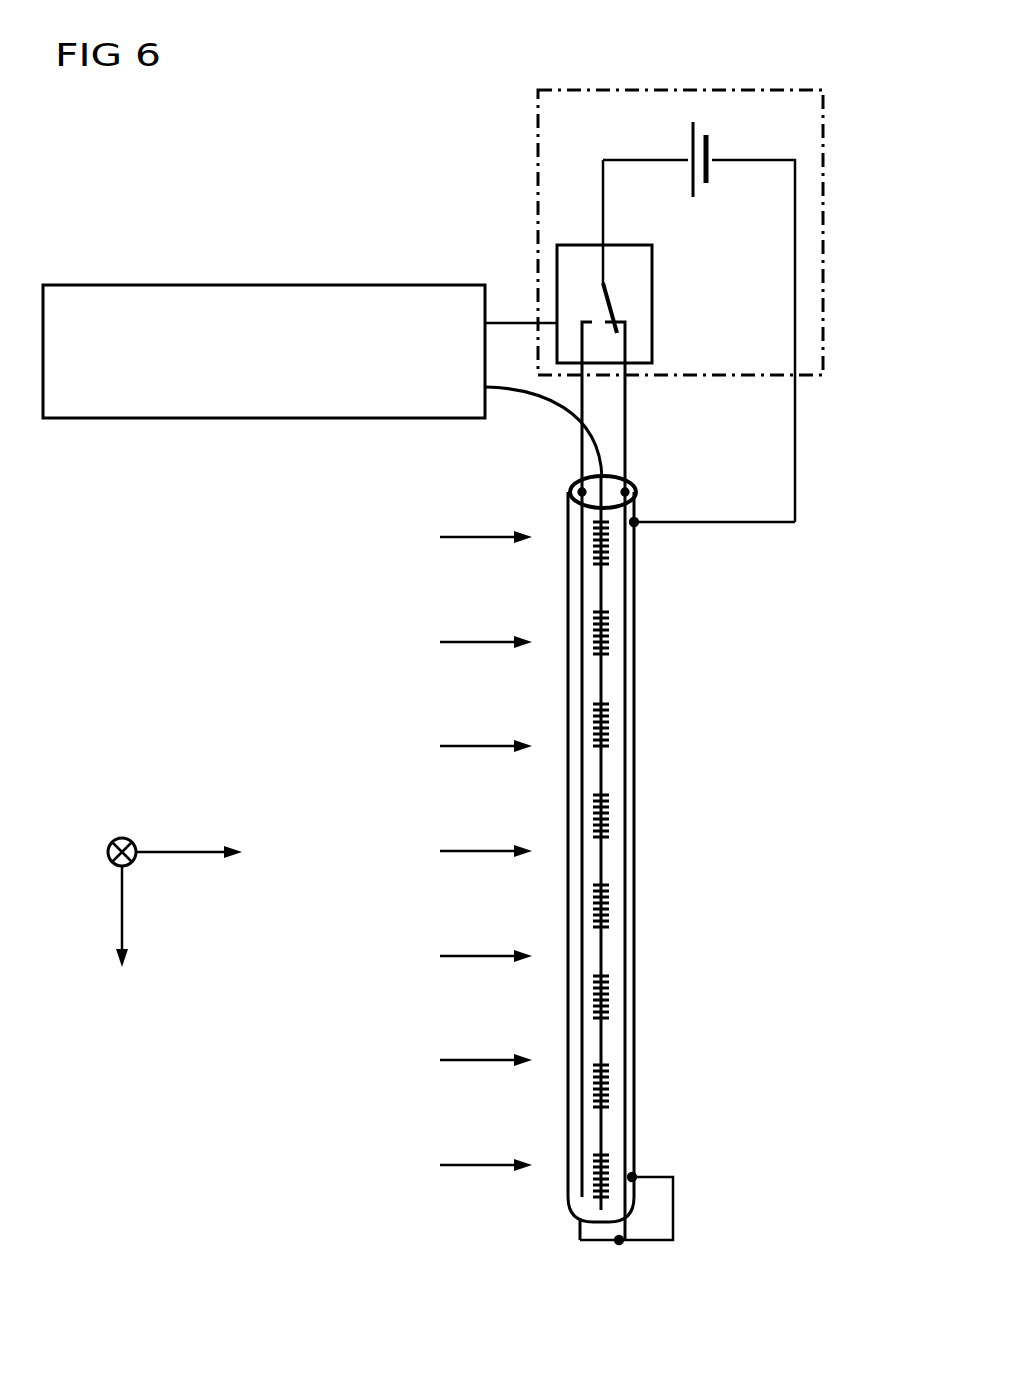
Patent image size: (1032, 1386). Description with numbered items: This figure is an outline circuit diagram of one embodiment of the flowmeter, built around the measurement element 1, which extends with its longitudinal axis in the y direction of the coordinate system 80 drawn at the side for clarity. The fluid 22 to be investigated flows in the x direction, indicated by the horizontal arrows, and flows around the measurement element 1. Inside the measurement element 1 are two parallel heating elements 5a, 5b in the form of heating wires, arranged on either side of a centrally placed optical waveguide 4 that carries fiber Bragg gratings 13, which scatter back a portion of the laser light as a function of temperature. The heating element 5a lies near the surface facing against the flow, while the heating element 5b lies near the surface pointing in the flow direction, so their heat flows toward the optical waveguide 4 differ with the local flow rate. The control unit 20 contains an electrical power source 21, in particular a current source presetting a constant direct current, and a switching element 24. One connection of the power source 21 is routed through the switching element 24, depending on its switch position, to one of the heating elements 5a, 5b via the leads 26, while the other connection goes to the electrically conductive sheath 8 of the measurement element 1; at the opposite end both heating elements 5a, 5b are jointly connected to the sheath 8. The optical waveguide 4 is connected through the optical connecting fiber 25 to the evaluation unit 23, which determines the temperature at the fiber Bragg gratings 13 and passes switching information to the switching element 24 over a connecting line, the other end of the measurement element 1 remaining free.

The measurement element 1 is at (636, 860).
The optical waveguide 4 is at (597, 1140).
The heating element 5a is at (580, 800).
The heating element 5b is at (624, 757).
The electrically conductive sheath 8 is at (634, 678).
The fiber Bragg gratings 13 is at (610, 907).
The control unit 20 is at (823, 232).
The electrical power source 21 is at (705, 120).
The fluid 22 is at (477, 958).
The evaluation unit 23 is at (266, 420).
The switching element 24 is at (580, 245).
The optical connecting fiber 25 is at (560, 405).
The supply leads 26 is at (582, 397).
The coordinate system 80 is at (155, 892).